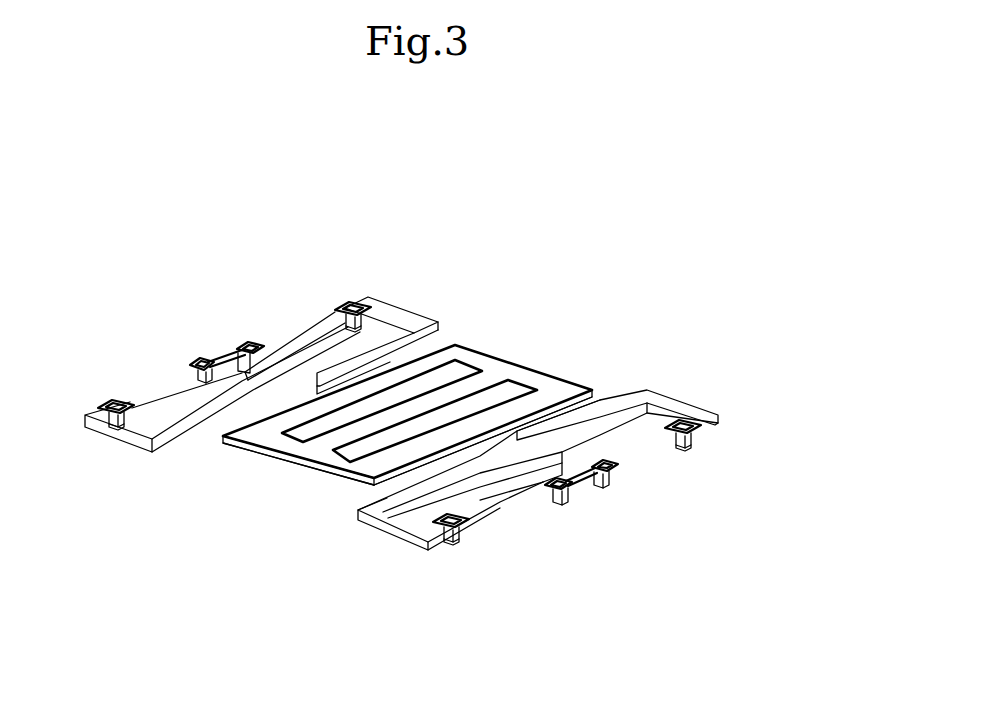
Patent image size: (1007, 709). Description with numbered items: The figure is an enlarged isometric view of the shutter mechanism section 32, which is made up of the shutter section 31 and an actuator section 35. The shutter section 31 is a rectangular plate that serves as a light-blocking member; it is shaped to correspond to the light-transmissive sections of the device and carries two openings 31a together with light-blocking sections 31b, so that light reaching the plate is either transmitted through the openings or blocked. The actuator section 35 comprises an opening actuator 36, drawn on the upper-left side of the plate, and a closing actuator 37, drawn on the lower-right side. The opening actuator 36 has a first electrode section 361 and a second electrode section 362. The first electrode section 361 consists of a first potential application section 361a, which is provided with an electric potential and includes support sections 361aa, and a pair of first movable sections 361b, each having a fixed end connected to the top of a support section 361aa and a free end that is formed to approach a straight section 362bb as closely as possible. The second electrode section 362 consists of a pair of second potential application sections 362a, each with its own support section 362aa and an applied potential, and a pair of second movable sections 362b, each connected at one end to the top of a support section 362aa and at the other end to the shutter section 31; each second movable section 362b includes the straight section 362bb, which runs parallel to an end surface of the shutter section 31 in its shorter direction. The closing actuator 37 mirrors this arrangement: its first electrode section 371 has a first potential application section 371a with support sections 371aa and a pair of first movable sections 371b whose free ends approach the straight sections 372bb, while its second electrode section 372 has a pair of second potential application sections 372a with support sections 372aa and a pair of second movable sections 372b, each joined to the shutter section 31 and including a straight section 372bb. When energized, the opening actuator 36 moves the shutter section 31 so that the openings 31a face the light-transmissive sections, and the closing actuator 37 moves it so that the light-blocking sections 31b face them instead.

The shutter section 31 is at (240, 470).
The openings 31a is at (270, 458).
The light-blocking sections 31b is at (507, 408).
The shutter mechanism section 32 is at (508, 266).
The actuator section 35 is at (378, 257).
The opening actuator 36 is at (279, 373).
The closing actuator 37 is at (548, 464).
The first electrode section 361 is at (216, 317).
The first potential application section 361a is at (195, 352).
The support sections 361aa is at (189, 352).
The first movable sections 361b is at (333, 338).
The second electrode section 362 is at (279, 375).
The second potential application sections 362a is at (106, 410).
The support section 362aa is at (120, 427).
The second movable sections 362b is at (148, 453).
The straight section 362bb is at (428, 366).
The first electrode section 371 is at (606, 525).
The first potential application section 371a is at (613, 472).
The support sections 371aa is at (565, 493).
The first movable sections 371b is at (613, 445).
The second electrode section 372 is at (548, 467).
The second potential application sections 372a is at (465, 530).
The support section 372aa is at (450, 543).
The second movable sections 372b is at (372, 536).
The straight section 372bb is at (510, 405).